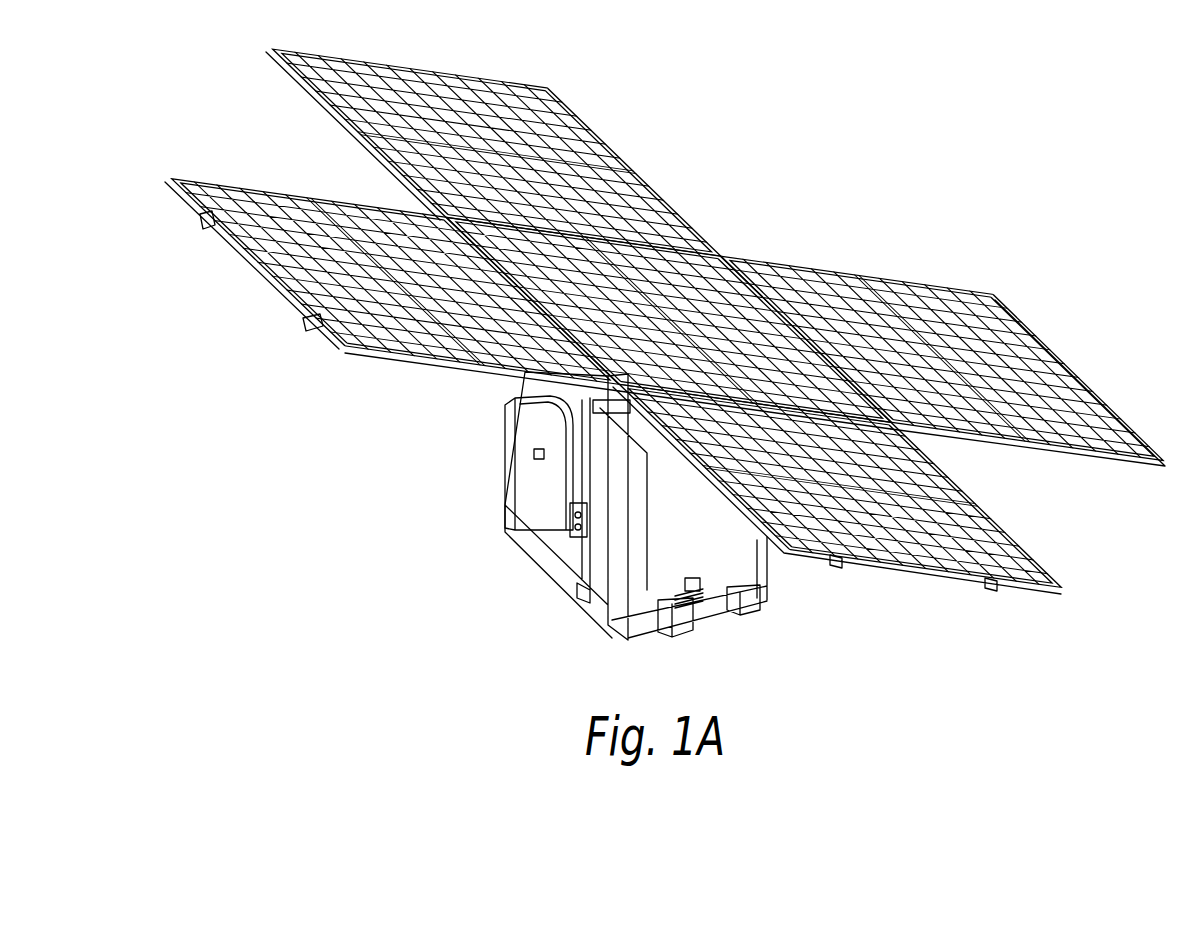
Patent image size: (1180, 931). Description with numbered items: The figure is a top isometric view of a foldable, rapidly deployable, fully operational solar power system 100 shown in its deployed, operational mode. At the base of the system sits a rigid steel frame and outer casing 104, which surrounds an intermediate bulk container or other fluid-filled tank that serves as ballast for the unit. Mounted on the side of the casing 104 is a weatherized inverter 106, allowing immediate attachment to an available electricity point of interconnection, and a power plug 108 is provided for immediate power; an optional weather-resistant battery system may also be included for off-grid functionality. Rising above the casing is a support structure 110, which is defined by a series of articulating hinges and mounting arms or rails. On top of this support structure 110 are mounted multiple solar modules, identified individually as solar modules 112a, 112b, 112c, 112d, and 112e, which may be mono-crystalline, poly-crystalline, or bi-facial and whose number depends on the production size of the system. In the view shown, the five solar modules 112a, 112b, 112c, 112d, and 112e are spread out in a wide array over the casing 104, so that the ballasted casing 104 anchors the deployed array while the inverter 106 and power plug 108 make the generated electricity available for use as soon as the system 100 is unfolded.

The solar power system 100 is at (884, 150).
The rigid steel frame and outer casing 104 is at (718, 540).
The side mounted weatherized inverter 106 is at (533, 451).
The power plug 108 is at (563, 518).
The support structure 110 is at (313, 332).
The solar module 112a is at (683, 303).
The solar module 112b is at (603, 173).
The solar module 112c is at (940, 303).
The solar module 112d is at (945, 466).
The solar module 112e is at (350, 198).